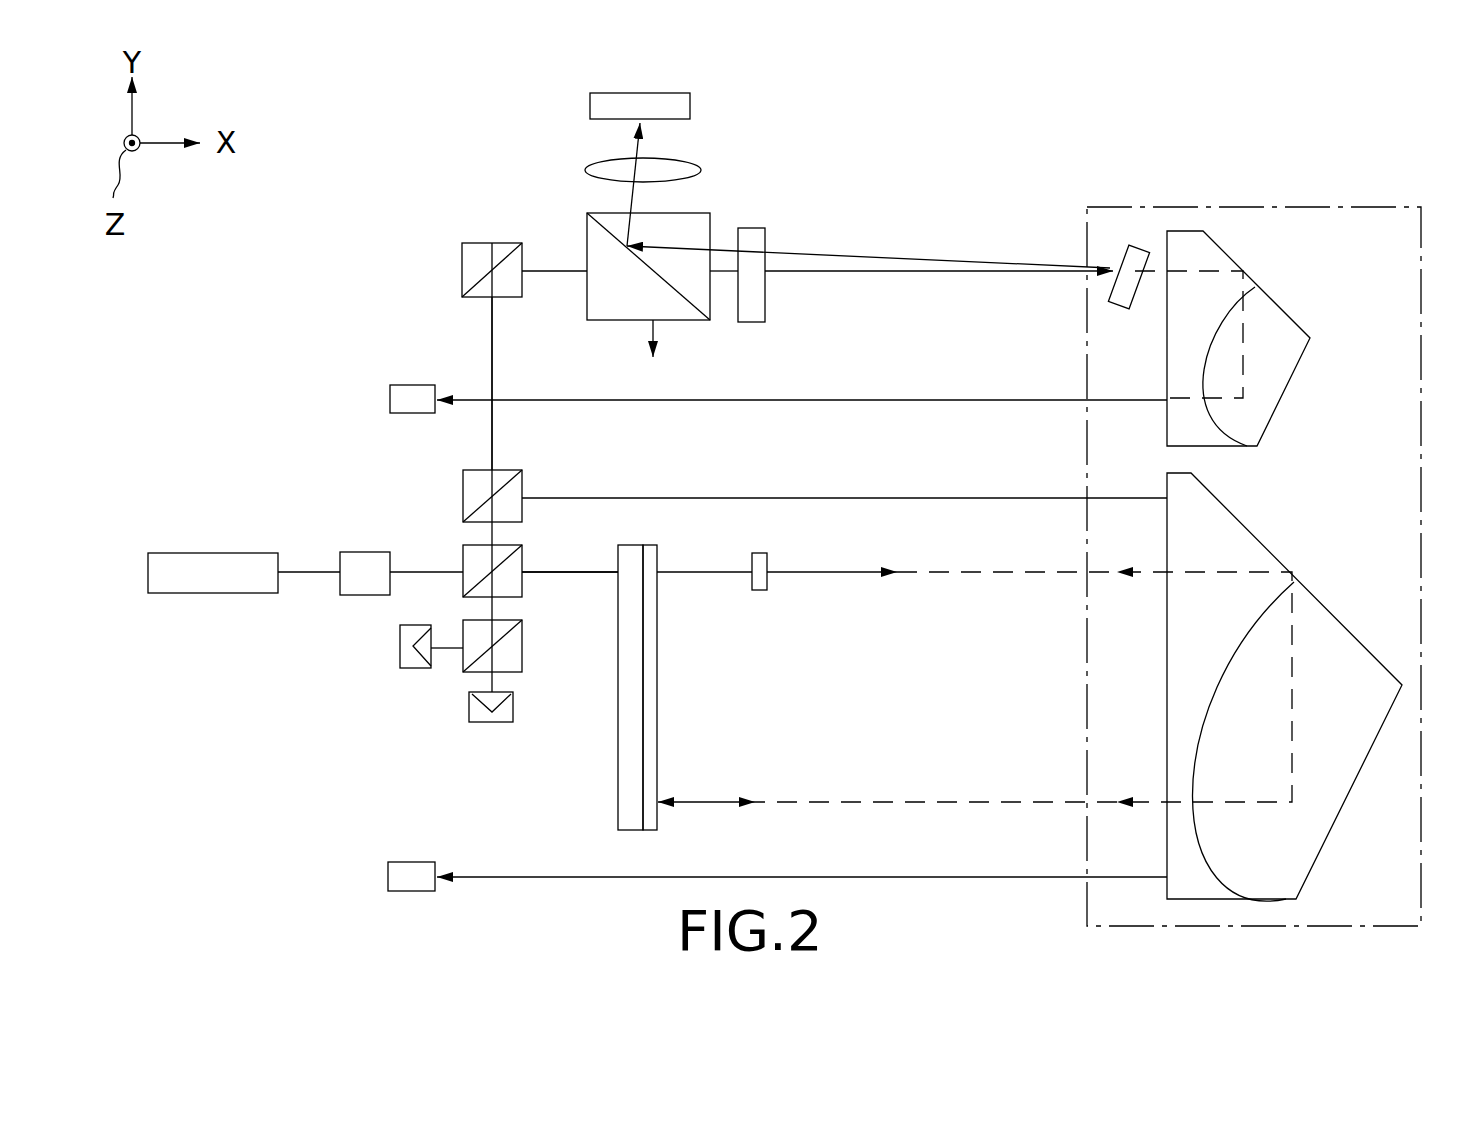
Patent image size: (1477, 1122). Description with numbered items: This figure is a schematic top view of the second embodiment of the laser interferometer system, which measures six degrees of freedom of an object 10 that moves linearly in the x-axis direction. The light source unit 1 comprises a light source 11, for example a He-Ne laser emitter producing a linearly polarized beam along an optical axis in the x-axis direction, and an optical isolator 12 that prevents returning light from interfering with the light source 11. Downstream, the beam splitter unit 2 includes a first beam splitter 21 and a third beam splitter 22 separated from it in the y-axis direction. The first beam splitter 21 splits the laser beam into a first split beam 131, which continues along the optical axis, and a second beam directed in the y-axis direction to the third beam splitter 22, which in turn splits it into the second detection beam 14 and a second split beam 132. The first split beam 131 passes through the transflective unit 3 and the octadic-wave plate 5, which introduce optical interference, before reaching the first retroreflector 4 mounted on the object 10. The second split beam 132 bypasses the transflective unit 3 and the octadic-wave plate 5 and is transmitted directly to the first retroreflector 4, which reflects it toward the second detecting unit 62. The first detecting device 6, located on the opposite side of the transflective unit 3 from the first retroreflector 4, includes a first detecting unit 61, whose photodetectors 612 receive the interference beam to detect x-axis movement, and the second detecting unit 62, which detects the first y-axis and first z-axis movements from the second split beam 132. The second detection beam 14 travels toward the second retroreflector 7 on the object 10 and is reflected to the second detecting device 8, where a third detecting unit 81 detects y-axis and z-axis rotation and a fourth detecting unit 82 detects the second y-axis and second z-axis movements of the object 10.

The light source unit 1 is at (269, 510).
The light source 11 is at (218, 575).
The optical isolator 12 is at (363, 563).
The beam splitter unit 2 is at (440, 522).
The first beam splitter 21 is at (473, 567).
The third beam splitter 22 is at (477, 492).
The second detection beam 14 is at (494, 425).
The first split beam 131 is at (578, 572).
The second split beam 132 is at (593, 498).
The transflective unit 3 is at (666, 706).
The octadic-wave plate 5 is at (758, 563).
The object 10 is at (1274, 198).
The second retroreflector 7 is at (1287, 307).
The first retroreflector 4 is at (1311, 566).
The second detecting device 8 is at (786, 212).
The third detecting unit 81 is at (741, 187).
The fourth detecting unit 82 is at (405, 385).
The first detecting device 6 is at (707, 763).
The first detecting unit 61 is at (398, 657).
The photodetectors 612 is at (398, 642).
The second detecting unit 62 is at (397, 873).